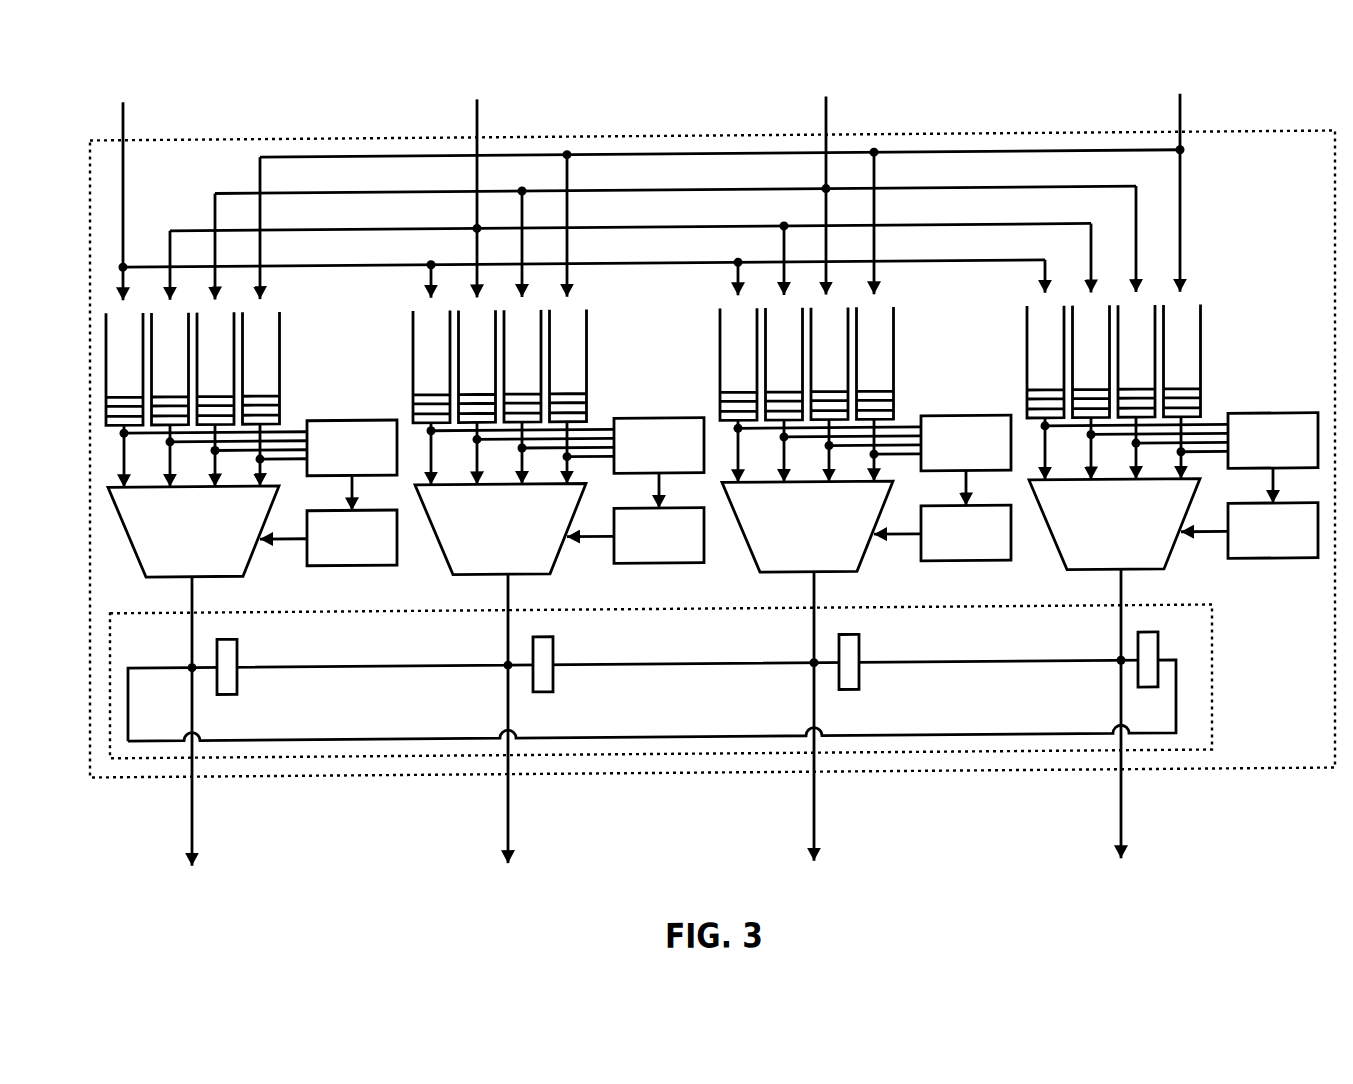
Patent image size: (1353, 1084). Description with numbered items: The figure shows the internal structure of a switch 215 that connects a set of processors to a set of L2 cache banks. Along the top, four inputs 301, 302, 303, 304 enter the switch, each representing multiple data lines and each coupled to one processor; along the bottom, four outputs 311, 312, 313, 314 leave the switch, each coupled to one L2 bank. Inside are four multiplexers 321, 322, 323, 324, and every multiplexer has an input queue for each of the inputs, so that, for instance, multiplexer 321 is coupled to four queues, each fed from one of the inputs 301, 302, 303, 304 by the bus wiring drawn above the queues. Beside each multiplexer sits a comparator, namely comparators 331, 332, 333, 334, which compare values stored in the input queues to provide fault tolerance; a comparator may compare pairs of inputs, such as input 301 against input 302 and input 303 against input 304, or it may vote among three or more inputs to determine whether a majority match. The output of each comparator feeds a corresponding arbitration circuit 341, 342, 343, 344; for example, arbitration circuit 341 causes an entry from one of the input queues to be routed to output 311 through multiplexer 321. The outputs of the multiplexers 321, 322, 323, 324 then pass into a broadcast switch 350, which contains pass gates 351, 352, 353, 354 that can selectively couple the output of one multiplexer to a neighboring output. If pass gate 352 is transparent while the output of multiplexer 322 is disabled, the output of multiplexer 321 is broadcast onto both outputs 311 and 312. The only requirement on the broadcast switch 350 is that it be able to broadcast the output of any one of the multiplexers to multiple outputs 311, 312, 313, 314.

The switch 215 is at (1335, 140).
The input 301 is at (575, 182).
The input 302 is at (630, 180).
The input 303 is at (675, 180).
The input 304 is at (728, 180).
The output 311 is at (192, 738).
The output 312 is at (508, 735).
The output 313 is at (814, 733).
The output 314 is at (1121, 730).
The multiplexer 321 is at (193, 500).
The multiplexer 322 is at (500, 498).
The multiplexer 323 is at (807, 495).
The multiplexer 324 is at (1114, 493).
The comparator 331 is at (259, 466).
The comparator 332 is at (566, 464).
The comparator 333 is at (873, 461).
The comparator 334 is at (1180, 459).
The arbitration circuit 341 is at (328, 538).
The arbitration circuit 342 is at (635, 536).
The arbitration circuit 343 is at (942, 533).
The arbitration circuit 344 is at (1249, 531).
The broadcast switch 350 is at (1212, 613).
The pass gate 351 is at (1148, 674).
The pass gate 352 is at (227, 681).
The pass gate 353 is at (544, 679).
The pass gate 354 is at (849, 676).